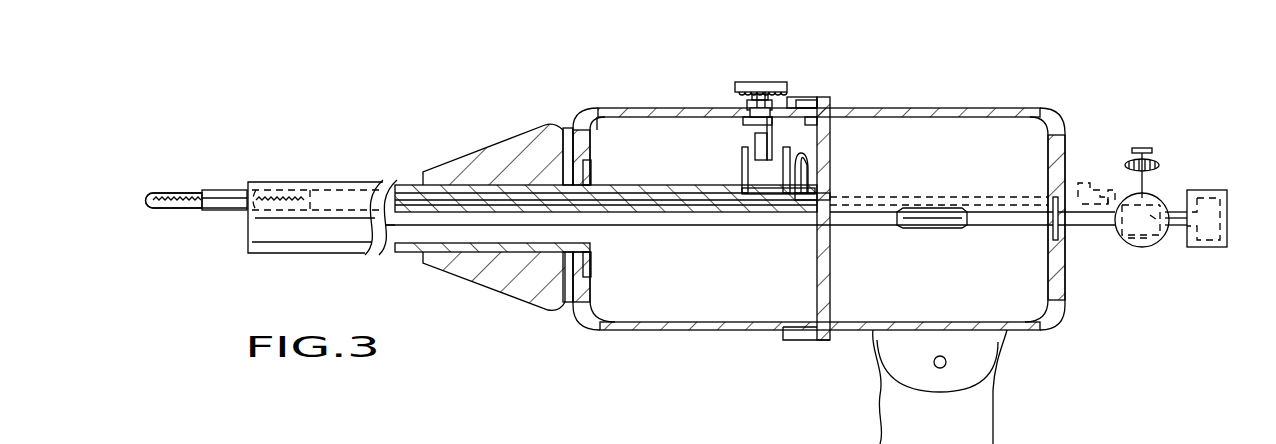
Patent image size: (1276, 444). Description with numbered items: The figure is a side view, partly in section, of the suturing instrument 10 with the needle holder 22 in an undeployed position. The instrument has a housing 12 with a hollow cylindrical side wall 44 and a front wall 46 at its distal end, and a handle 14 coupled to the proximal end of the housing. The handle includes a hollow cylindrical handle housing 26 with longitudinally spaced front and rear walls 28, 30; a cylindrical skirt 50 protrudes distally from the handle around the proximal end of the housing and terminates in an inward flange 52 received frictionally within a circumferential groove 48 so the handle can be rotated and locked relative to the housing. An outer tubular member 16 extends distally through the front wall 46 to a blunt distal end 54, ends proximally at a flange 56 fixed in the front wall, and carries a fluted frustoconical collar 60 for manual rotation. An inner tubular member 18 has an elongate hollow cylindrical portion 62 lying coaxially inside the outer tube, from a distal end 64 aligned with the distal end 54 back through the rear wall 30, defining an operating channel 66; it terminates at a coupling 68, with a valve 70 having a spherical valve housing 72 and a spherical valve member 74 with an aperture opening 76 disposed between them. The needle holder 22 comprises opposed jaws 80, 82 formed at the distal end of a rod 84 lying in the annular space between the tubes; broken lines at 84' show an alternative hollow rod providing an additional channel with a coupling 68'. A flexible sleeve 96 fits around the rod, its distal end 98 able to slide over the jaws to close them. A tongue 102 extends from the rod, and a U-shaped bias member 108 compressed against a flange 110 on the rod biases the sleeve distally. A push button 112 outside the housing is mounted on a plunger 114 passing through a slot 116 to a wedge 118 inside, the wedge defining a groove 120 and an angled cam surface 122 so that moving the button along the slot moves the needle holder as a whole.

The suturing instrument 10 is at (378, 110).
The housing 12 is at (618, 95).
The handle 14 is at (976, 103).
The outer tubular member 16 is at (322, 148).
The inner tubular member 18 is at (457, 205).
The needle holder 22 is at (132, 193).
The handle housing 26 is at (940, 108).
The front wall 28 is at (852, 195).
The rear wall 30 is at (1063, 128).
The side wall 44 is at (644, 112).
The front wall 46 is at (595, 122).
The groove 48 is at (792, 108).
The skirt 50 is at (823, 122).
The flange 52 is at (808, 100).
The distal end 54 is at (243, 180).
The flange 56 is at (563, 167).
The collar 60 is at (488, 145).
The cylindrical portion 62 is at (940, 228).
The distal end 64 is at (248, 225).
The operating channel 66 is at (930, 212).
The coupling 68 is at (1227, 194).
The coupling 68' is at (1135, 155).
The valve 70 is at (1083, 182).
The valve housing 72 is at (1127, 240).
The valve member 74 is at (1143, 243).
The aperture opening 76 is at (1166, 247).
The jaw 80 is at (158, 190).
The jaw 82 is at (165, 212).
The rod 84 is at (594, 163).
The rod 84' is at (939, 164).
The sleeve 96 is at (213, 190).
The distal end 98 is at (200, 209).
The tongue 102 is at (740, 148).
The bias member 108 is at (800, 153).
The flange 110 is at (812, 180).
The push button 112 is at (762, 82).
The plunger 114 is at (797, 80).
The slot 116 is at (735, 88).
The wedge 118 is at (738, 110).
The groove 120 is at (760, 142).
The cam surface 122 is at (755, 135).